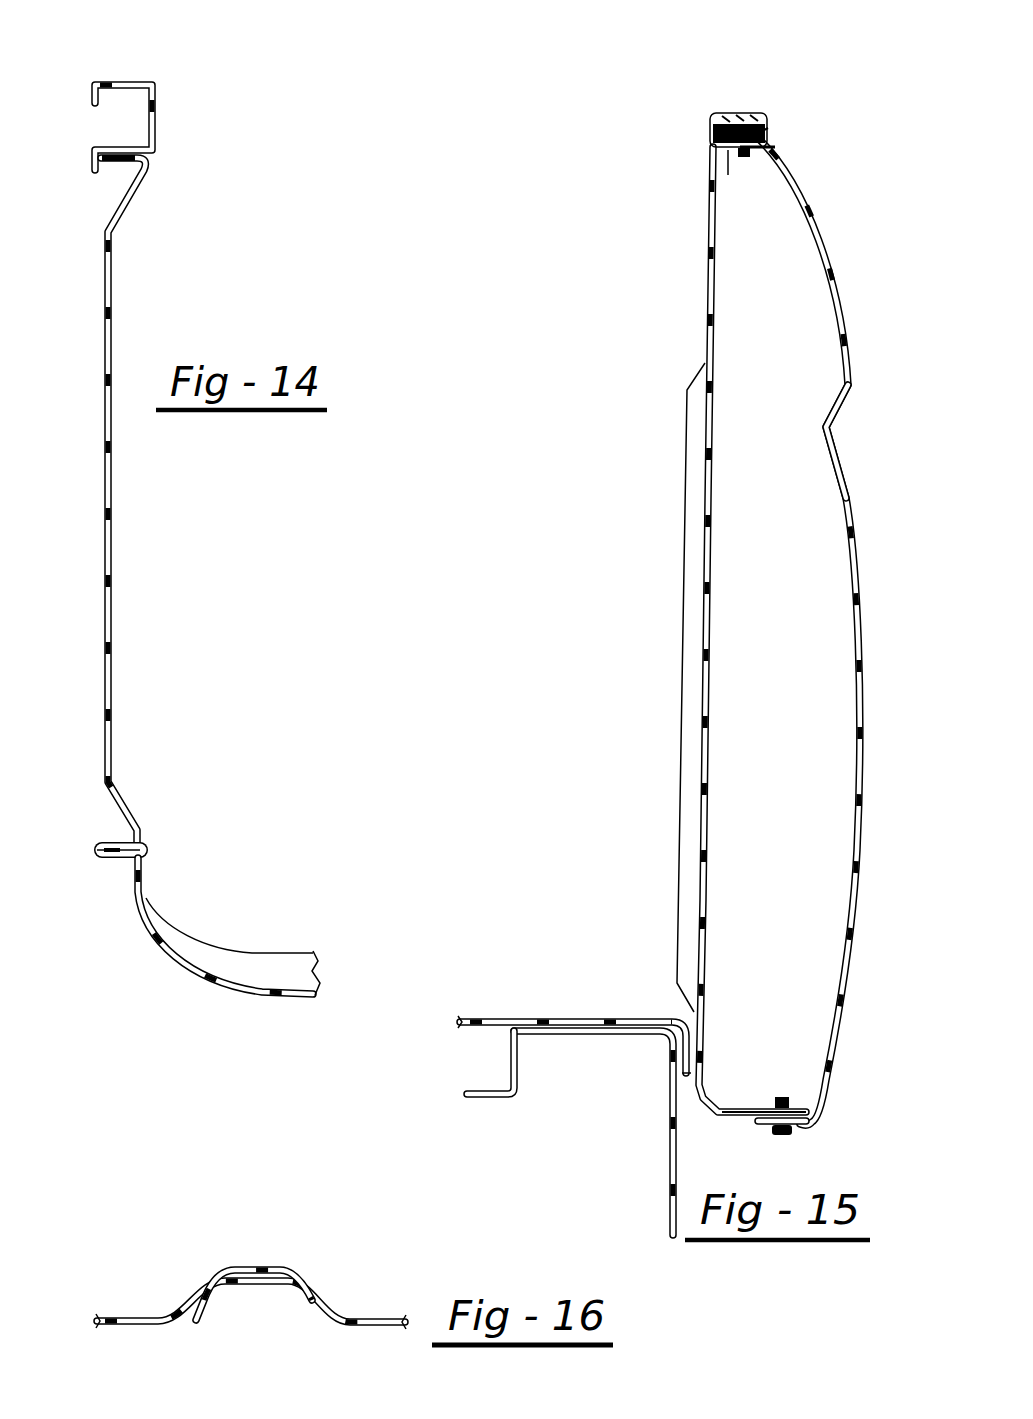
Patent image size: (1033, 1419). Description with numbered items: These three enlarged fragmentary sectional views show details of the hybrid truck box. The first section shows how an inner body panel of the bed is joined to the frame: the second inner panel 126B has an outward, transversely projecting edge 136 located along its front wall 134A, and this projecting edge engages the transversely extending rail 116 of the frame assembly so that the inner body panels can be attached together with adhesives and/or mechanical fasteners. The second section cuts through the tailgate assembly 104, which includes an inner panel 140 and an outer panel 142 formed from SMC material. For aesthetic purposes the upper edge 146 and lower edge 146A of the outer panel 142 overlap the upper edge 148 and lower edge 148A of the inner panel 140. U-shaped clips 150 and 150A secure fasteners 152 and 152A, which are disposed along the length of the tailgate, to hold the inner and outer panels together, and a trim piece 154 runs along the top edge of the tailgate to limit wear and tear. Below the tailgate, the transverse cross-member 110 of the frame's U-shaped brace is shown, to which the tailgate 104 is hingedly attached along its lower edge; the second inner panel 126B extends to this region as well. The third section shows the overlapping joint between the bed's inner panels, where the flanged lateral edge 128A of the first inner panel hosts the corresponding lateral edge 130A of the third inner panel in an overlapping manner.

In FIG. 15, the tailgate assembly 104 is at (866, 563).
In FIG. 15, the transverse cross-member 110 is at (671, 1147).
In FIG. 14, the transversely extending rail 116 is at (133, 84).
In FIG. 15, the second inner panel 126B is at (498, 1018).
In FIG. 16, the flanged lateral edge 128A is at (315, 1297).
In FIG. 16, the lateral edge 130A is at (313, 1293).
In FIG. 14, the front wall 134A is at (110, 330).
In FIG. 14, the outward, transversely projecting edge 136 is at (120, 162).
In FIG. 15, the inner panel 140 is at (707, 545).
In FIG. 15, the outer panel 142 is at (845, 478).
In FIG. 15, the upper edge 146 is at (770, 127).
In FIG. 15, the upper edge 148 is at (733, 150).
In FIG. 15, the U-shaped clip 150 is at (773, 152).
In FIG. 15, the fastener 152 is at (746, 156).
In FIG. 15, the trim piece 154 is at (742, 112).
In FIG. 15, the lower edge 146A is at (794, 1128).
In FIG. 15, the lower edge 148A is at (747, 1107).
In FIG. 15, the U-shaped clip 150A is at (800, 1113).
In FIG. 15, the fastener 152A is at (782, 1097).